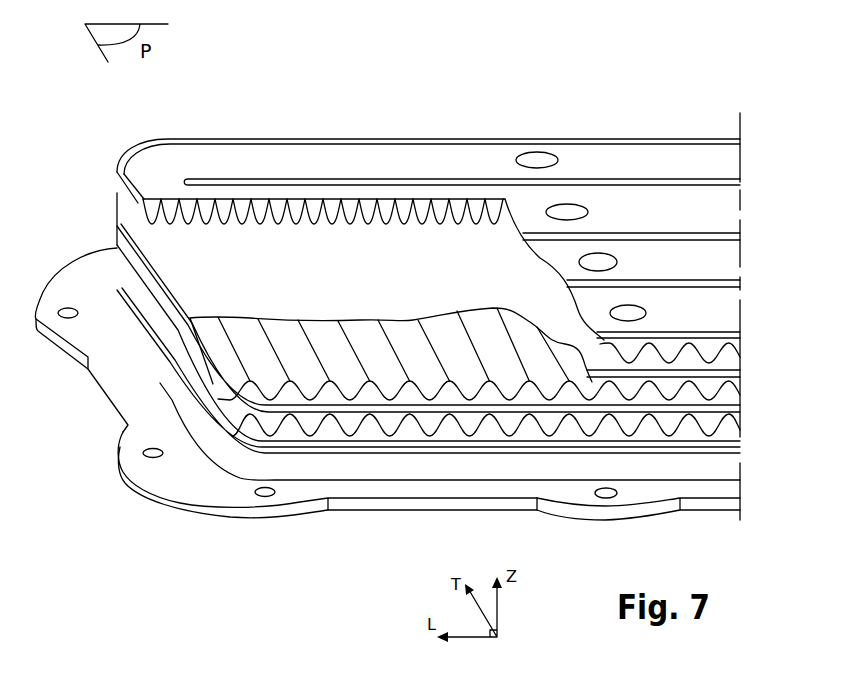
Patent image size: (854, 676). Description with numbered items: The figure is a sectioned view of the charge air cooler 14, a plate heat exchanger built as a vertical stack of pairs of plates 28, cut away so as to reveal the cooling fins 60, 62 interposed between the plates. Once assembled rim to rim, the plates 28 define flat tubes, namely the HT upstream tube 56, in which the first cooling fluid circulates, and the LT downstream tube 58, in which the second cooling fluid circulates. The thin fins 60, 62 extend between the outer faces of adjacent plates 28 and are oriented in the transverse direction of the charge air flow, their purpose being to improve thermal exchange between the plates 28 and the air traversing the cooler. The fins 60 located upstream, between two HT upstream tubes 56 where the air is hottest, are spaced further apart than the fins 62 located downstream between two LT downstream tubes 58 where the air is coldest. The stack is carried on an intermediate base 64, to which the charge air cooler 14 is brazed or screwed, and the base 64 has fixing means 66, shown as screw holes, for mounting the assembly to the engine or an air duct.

The charge air cooler 14 is at (92, 145).
The plate 28 is at (203, 287).
The HT upstream tube 56 is at (713, 373).
The LT downstream tube 58 is at (370, 240).
The cooling fin 60 is at (240, 423).
The cooling fin 62 is at (223, 208).
The intermediate base 64 is at (390, 488).
The fixing means 66 is at (263, 492).